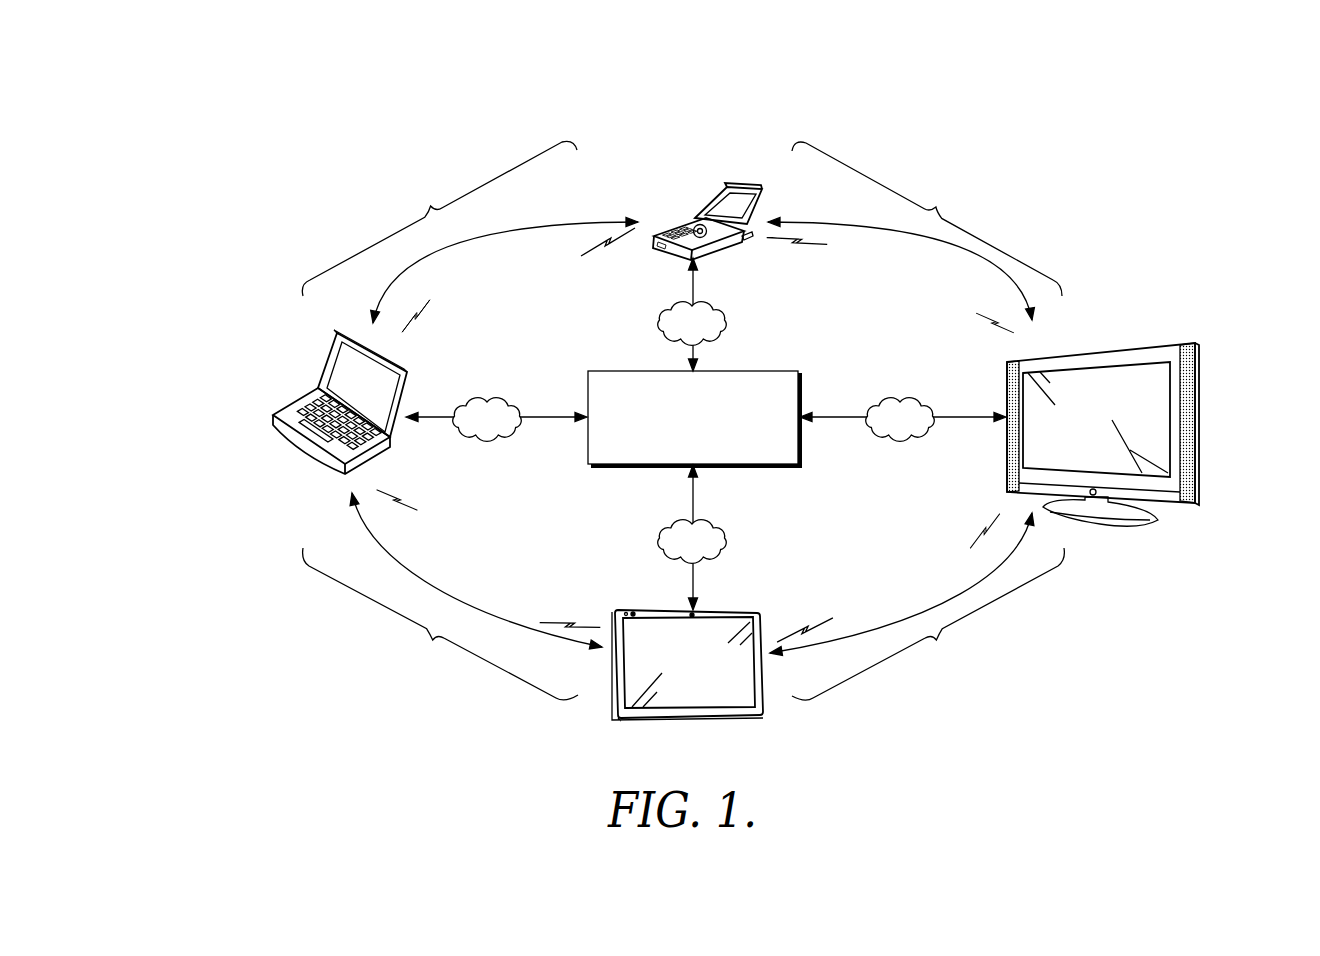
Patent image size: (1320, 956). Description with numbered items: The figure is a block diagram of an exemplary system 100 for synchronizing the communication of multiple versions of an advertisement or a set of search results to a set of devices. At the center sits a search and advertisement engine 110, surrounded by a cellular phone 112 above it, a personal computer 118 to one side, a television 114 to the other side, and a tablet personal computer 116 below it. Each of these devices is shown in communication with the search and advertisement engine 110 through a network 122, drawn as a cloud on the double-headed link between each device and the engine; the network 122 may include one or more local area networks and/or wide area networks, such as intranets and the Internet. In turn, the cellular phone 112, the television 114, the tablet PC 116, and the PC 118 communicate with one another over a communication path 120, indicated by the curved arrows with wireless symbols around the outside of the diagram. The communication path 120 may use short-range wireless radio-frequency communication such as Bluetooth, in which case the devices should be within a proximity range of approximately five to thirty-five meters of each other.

The system 100 is at (258, 145).
The search and advertisement engine 110 is at (753, 362).
The cellular phone 112 is at (653, 251).
The television 114 is at (1190, 343).
The tablet personal computer 116 is at (732, 610).
The personal computer 118 is at (300, 385).
The communication path 120 is at (431, 206).
The network 122 is at (711, 303).